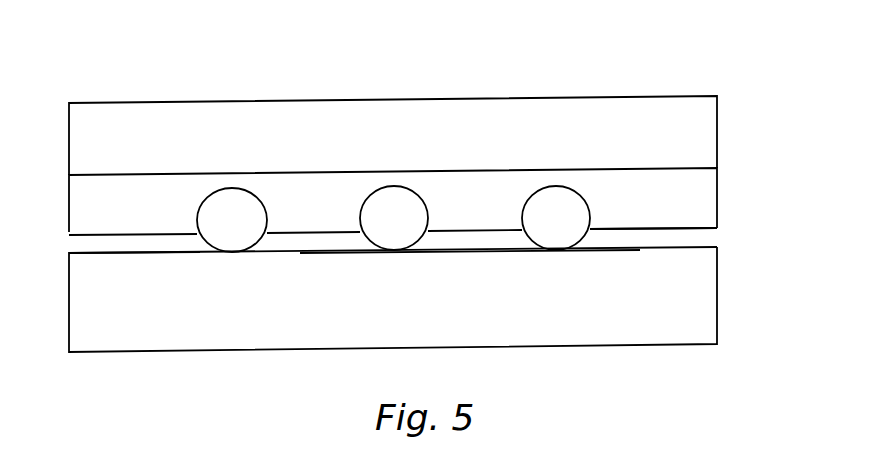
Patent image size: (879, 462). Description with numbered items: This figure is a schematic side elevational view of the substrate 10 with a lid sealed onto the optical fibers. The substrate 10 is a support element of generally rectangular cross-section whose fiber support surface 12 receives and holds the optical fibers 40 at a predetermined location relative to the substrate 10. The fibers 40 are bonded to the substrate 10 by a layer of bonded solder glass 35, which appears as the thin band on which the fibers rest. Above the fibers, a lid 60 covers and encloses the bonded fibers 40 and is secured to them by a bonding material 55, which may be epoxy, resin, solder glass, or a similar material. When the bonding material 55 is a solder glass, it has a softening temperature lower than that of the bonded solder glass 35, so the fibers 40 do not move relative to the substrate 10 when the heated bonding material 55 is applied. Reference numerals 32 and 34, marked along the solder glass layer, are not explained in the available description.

The substrate 10 is at (710, 316).
The fiber support surface 12 is at (460, 252).
The first end of film 32 is at (102, 233).
The second end of film 34 is at (644, 256).
The bonded solder glass 35 is at (717, 232).
The optical fibers 40 is at (558, 205).
The bonding material 55 is at (702, 200).
The lid 60 is at (717, 113).